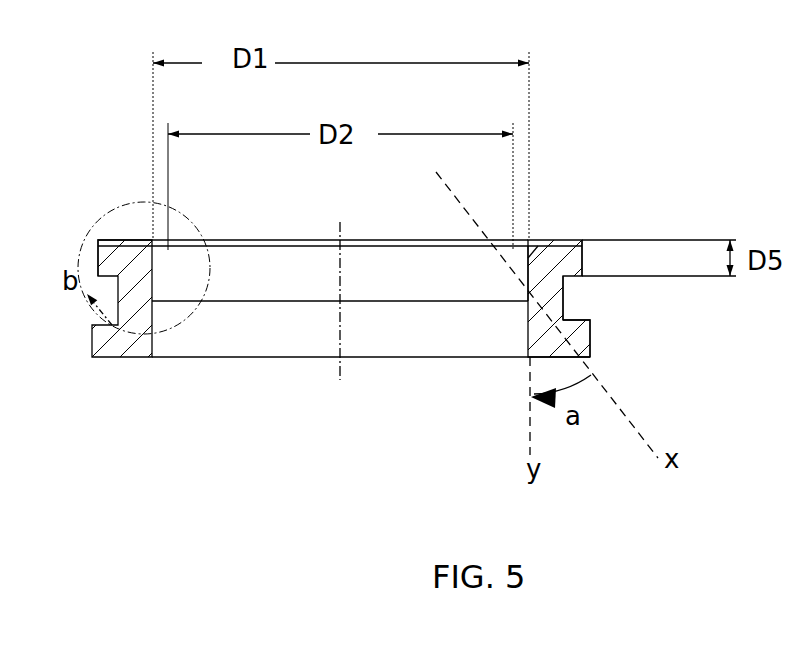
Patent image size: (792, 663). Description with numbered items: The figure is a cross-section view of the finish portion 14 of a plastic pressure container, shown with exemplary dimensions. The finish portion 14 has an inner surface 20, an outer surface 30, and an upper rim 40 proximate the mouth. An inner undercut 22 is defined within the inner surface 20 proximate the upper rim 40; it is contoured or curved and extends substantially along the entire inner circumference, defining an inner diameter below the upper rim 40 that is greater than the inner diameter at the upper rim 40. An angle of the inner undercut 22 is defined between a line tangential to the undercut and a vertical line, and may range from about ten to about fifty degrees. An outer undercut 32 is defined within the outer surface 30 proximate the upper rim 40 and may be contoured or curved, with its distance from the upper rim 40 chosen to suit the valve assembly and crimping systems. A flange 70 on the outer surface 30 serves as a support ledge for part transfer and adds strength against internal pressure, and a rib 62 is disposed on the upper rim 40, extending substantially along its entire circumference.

The finish portion 14 is at (717, 36).
The inner surface 20 is at (533, 357).
The inner undercut 22 is at (517, 273).
The outer surface 30 is at (563, 287).
The outer undercut 32 is at (564, 268).
The upper rim 40 is at (567, 240).
The rib 62 is at (124, 241).
The flange 70 is at (583, 350).